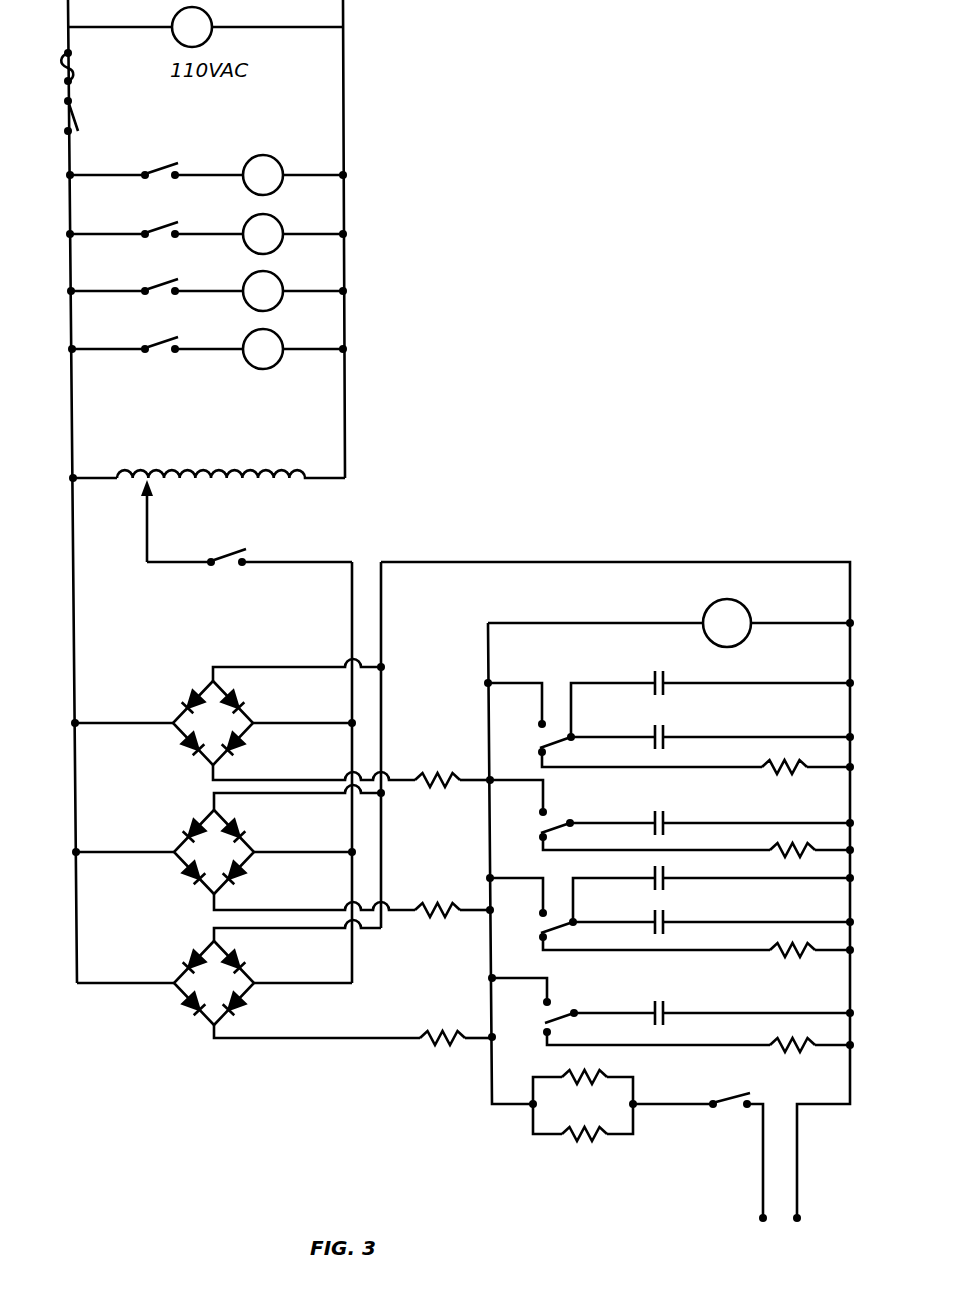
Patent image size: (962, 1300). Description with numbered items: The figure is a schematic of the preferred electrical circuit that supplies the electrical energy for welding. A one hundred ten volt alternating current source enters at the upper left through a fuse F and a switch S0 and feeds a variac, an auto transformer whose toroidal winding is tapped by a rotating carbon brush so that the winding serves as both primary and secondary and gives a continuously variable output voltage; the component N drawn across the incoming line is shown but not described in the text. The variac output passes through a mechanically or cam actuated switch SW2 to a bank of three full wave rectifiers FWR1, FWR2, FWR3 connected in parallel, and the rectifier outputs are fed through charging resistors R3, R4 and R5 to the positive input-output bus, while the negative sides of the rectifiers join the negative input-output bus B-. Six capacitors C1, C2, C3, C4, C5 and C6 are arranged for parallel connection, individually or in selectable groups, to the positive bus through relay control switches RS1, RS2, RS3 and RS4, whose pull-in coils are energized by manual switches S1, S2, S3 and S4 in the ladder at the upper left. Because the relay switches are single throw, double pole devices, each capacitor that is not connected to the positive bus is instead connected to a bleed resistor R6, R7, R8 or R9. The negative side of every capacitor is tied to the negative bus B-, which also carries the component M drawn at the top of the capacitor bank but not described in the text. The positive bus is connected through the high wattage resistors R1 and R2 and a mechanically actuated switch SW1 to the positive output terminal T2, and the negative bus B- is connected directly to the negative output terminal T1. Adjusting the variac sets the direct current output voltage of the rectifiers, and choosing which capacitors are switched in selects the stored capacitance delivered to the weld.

The neon indicator lamp N is at (192, 27).
The fuse F is at (60, 68).
The switch S0 is at (75, 118).
The manual switch S1 is at (163, 160).
The manual switch S2 is at (163, 220).
The manual switch S3 is at (163, 277).
The manual switch S4 is at (163, 335).
The relay control switch RS1 is at (260, 153).
The relay control switch RS2 is at (248, 222).
The relay control switch RS3 is at (248, 279).
The relay control switch RS4 is at (248, 337).
The mechanically or cam actuated switch SW2 is at (222, 557).
The mechanically actuated switch SW1 is at (730, 1101).
The full wave rectifier FWR1 is at (175, 720).
The full wave rectifier FWR2 is at (175, 850).
The full wave rectifier FWR3 is at (176, 982).
The negative input-output bus B- is at (850, 577).
The meter M is at (671, 623).
The capacitor C1 is at (665, 1010).
The capacitor C2 is at (665, 919).
The capacitor C3 is at (665, 875).
The capacitor C4 is at (665, 820).
The capacitor C5 is at (665, 734).
The capacitor C6 is at (665, 680).
The resistor R1 is at (586, 1076).
The resistor R2 is at (572, 1130).
The charging resistor R3 is at (440, 1043).
The charging resistor R4 is at (440, 915).
The charging resistor R5 is at (440, 785).
The bleed resistor R6 is at (795, 1050).
The bleed resistor R7 is at (790, 956).
The bleed resistor R8 is at (790, 856).
The bleed resistor R9 is at (790, 773).
The negative output terminal T1 is at (800, 1217).
The positive output terminal T2 is at (761, 1216).